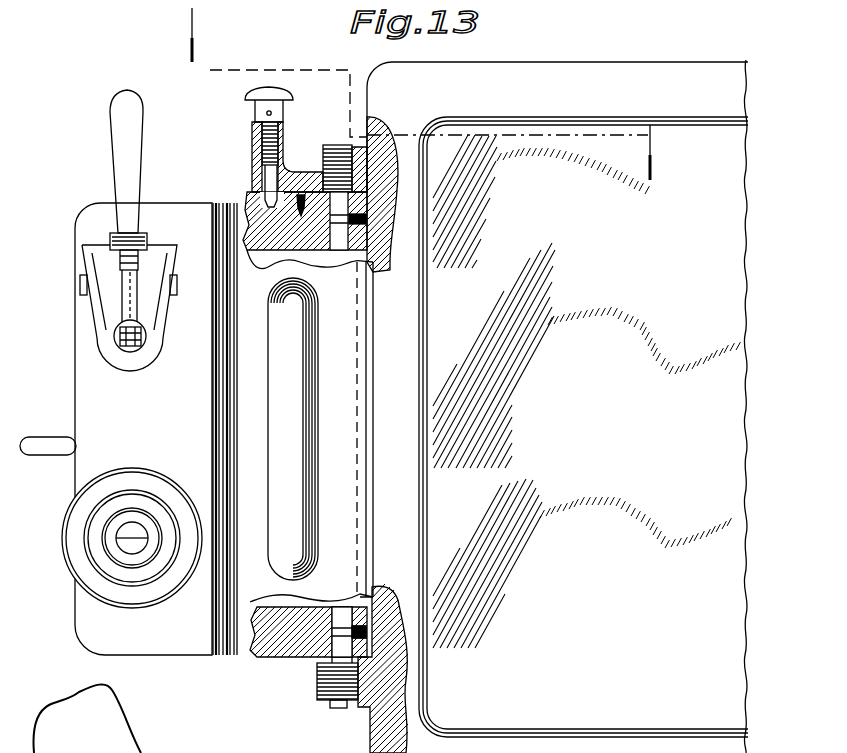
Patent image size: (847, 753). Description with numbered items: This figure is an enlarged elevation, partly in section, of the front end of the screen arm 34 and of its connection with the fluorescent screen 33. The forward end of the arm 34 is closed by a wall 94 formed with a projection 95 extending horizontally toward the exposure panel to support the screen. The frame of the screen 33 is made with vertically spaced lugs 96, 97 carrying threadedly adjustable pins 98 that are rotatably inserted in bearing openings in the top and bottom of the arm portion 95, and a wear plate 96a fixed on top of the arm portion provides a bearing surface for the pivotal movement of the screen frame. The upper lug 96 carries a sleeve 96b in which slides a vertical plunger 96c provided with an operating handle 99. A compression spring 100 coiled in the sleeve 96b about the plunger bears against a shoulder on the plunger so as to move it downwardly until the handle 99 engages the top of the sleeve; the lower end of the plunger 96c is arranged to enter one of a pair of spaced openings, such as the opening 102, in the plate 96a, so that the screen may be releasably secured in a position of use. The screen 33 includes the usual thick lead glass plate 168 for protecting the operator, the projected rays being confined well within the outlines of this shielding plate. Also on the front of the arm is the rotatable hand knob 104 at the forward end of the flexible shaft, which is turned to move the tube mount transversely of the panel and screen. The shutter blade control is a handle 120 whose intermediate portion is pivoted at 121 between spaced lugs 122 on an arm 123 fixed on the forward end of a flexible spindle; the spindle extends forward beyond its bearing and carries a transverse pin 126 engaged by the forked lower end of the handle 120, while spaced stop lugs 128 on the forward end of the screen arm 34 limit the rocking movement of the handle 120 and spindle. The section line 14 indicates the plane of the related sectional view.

The section line 14- 14 is at (205, 80).
The fluorescent screen 33 is at (581, 67).
The arm 34 is at (88, 212).
The wall 94 is at (86, 368).
The projection 95 is at (348, 447).
The lug 96 is at (298, 168).
The wear plate 96a is at (252, 160).
The sleeve 96b is at (256, 133).
The plunger 96c is at (256, 116).
The lug 97 is at (318, 674).
The pin 98 is at (335, 145).
The operating handle 99 is at (256, 99).
The compression spring 100 is at (252, 150).
The opening 102 is at (250, 193).
The hand knob 104 is at (136, 598).
The handle 120 is at (122, 101).
The pivot 121 is at (148, 255).
The lugs 122 is at (114, 238).
The arm 123 is at (150, 305).
The transverse pin 126 is at (142, 338).
The stop lugs 128 is at (80, 285).
The lead glass plate 168 is at (742, 263).